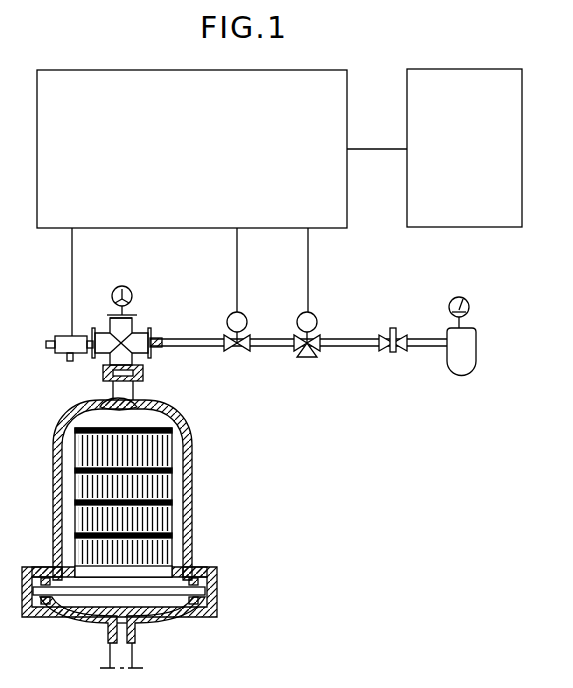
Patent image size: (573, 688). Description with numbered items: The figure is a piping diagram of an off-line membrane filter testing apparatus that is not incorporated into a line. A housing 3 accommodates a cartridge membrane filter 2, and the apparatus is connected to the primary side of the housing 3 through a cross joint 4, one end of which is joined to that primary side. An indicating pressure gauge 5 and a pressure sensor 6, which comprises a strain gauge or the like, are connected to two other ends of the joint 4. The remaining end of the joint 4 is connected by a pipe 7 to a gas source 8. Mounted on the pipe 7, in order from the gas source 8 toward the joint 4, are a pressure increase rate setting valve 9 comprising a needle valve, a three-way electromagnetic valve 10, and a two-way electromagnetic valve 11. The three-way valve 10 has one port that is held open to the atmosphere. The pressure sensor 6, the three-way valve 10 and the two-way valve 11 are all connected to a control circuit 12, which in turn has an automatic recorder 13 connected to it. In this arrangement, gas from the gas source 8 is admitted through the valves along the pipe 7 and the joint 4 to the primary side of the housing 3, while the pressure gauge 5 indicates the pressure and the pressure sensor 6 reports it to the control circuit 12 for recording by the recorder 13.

The cartridge membrane filter 2 is at (157, 508).
The housing 3 is at (53, 503).
The cross joint 4 is at (140, 347).
The indicating pressure gauge 5 is at (130, 288).
The pressure sensor 6 is at (60, 350).
The pipe 7 is at (348, 347).
The gas source 8 is at (467, 346).
The pressure increase rate setting valve 9 is at (398, 350).
The three-way electromagnetic valve 10 is at (307, 358).
The two-way electromagnetic valve 11 is at (243, 347).
The control circuit 12 is at (199, 163).
The automatic recorder 13 is at (467, 165).